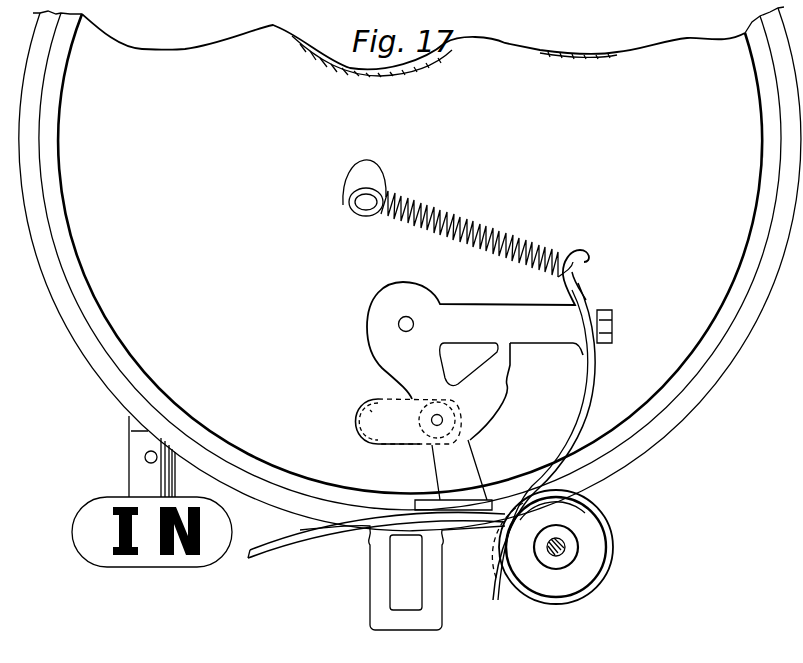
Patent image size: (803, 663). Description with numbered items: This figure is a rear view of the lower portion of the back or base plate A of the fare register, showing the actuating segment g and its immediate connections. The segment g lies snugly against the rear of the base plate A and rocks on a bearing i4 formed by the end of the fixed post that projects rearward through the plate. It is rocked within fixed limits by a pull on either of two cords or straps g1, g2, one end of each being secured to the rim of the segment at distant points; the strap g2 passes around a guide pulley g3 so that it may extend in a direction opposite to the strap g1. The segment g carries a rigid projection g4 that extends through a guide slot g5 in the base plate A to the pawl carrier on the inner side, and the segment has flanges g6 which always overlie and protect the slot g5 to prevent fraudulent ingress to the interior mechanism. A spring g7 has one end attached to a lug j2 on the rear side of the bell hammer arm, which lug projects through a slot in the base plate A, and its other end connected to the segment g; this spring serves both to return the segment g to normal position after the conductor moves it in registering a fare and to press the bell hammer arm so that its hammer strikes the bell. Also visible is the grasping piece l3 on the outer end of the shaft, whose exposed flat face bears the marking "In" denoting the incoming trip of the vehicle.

The base plate A is at (410, 269).
The grasping piece l3 is at (104, 500).
The actuating segment g is at (489, 380).
The cord or strap g1 is at (296, 538).
The cord or strap g2 is at (503, 606).
The guide pulley g3 is at (606, 570).
The rigid projection g4 is at (450, 408).
The guide slot g5 is at (352, 426).
The flanges g6 is at (357, 402).
The spring g7 is at (497, 226).
The bearing i4 is at (402, 318).
The lug j2 is at (350, 212).